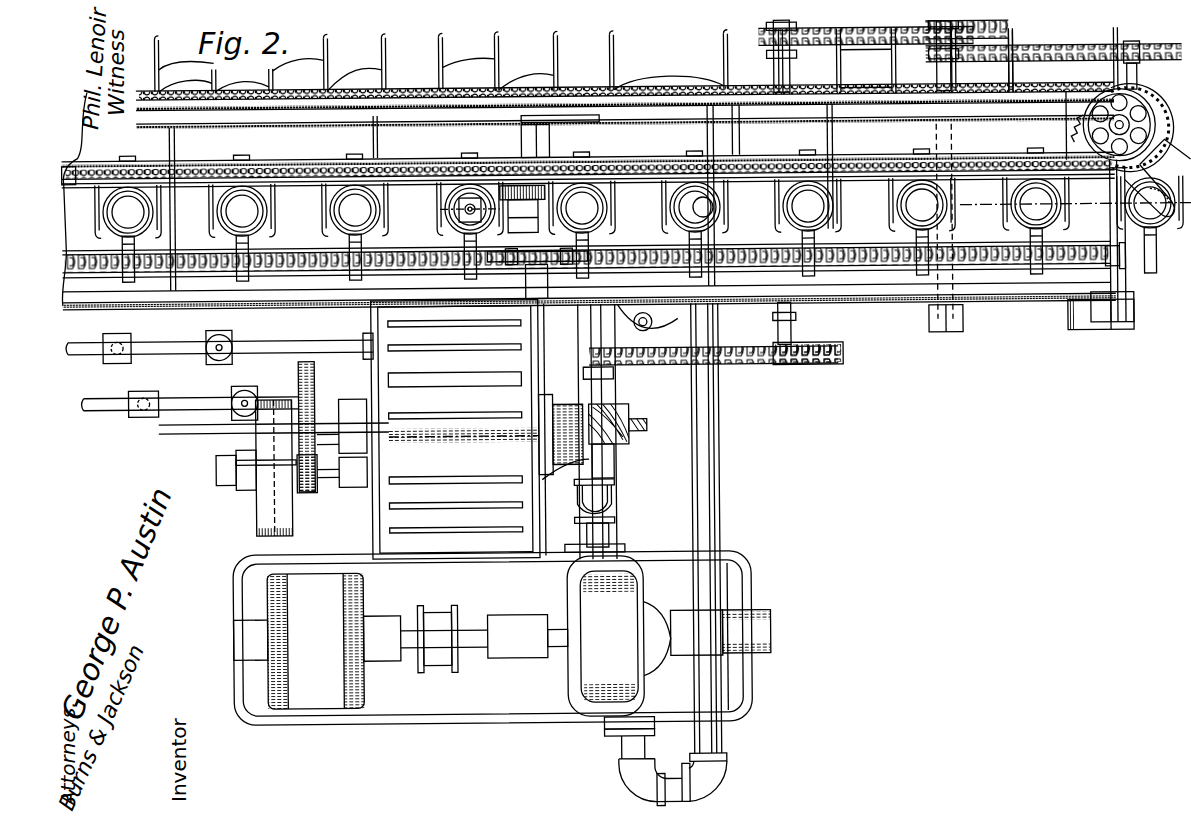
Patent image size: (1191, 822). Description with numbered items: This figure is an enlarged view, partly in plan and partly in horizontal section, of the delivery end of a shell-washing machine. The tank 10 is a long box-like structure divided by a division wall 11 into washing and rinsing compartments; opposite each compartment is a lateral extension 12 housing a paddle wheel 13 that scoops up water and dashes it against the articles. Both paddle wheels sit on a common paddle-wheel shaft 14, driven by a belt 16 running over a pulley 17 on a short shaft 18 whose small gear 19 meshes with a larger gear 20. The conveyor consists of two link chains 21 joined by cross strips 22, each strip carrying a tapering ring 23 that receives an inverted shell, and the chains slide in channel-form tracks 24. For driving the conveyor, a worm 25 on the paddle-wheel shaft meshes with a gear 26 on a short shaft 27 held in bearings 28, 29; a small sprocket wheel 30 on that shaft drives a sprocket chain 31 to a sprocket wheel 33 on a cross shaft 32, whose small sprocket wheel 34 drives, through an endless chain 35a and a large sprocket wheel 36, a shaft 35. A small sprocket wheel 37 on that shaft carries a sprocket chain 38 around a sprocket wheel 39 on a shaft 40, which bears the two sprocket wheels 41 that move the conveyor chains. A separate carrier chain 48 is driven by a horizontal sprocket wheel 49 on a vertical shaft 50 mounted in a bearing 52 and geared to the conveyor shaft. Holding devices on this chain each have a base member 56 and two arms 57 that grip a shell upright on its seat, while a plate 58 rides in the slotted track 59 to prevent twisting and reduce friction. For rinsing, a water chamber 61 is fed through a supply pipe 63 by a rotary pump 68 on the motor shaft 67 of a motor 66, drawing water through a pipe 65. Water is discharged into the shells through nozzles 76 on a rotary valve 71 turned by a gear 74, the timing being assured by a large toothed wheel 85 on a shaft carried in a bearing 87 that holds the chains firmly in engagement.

The tank 10 is at (247, 315).
The division wall 11 is at (170, 345).
The lateral extension 12 is at (378, 516).
The paddle wheel 13 is at (375, 508).
The paddle-wheel shaft 14 is at (160, 428).
The belt 16 is at (258, 536).
The pulley 17 is at (257, 478).
The short shaft 18 is at (298, 478).
The small gear 19 is at (310, 490).
The larger gear 20 is at (303, 366).
The link chains 21 is at (895, 265).
The cross strips 22 is at (592, 238).
The ring 23 is at (608, 212).
The tracks 24 is at (877, 190).
The worm 25 is at (625, 445).
The gear 26 is at (640, 428).
The short shaft 27 is at (618, 392).
The bearing 28 is at (595, 322).
The bearing 29 is at (618, 470).
The small sprocket wheel 30 is at (600, 360).
The sprocket chain 31 is at (727, 368).
The shaft 32 is at (793, 322).
The sprocket wheel 33 is at (800, 370).
The small sprocket wheel 34 is at (865, 48).
The shaft 35 is at (935, 128).
The endless chain 35a is at (866, 66).
The large sprocket wheel 36 is at (960, 24).
The small sprocket wheel 37 is at (945, 58).
The sprocket chain 38 is at (1053, 58).
The sprocket wheel 39 is at (1135, 66).
The shaft 40 is at (1130, 280).
The sprocket wheels 41 is at (1115, 253).
The carrier chain 48 is at (426, 100).
The sprocket wheel 49 is at (1160, 123).
The vertical shaft 50 is at (1135, 118).
The bearing 52 is at (775, 60).
The base member 56 is at (225, 205).
The arms 57 is at (222, 226).
The plate 58 is at (255, 170).
The track 59 is at (233, 112).
The water chamber 61 is at (455, 212).
The supply pipe 63 is at (612, 532).
The pipe 65 is at (722, 498).
The motor 66 is at (366, 700).
The motor shaft 67 is at (555, 650).
The rotary pump 68 is at (598, 612).
The valve 71 is at (1010, 212).
The gear 74 is at (522, 135).
The discharge nozzles 76 is at (462, 221).
The large toothed wheel 85 is at (535, 259).
The bearing 87 is at (530, 297).